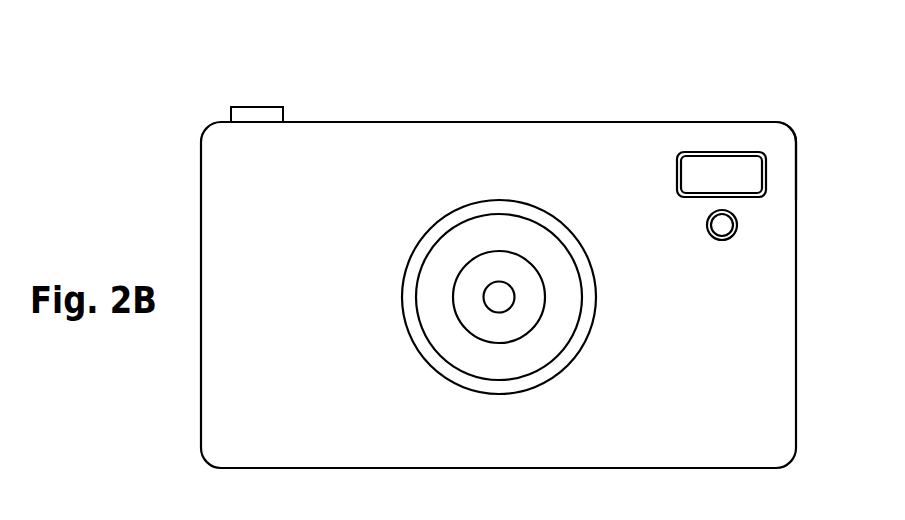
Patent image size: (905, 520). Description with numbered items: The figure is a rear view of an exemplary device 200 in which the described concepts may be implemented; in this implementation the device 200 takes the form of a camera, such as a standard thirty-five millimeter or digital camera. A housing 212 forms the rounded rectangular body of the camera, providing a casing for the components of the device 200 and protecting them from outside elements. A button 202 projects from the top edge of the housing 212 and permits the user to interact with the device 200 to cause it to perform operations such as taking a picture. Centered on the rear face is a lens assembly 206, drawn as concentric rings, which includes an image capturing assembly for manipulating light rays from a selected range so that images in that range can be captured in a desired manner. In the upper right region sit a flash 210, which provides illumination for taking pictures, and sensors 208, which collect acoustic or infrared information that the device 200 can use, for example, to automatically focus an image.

The device 200 is at (404, 52).
The button 202 is at (264, 107).
The lens assembly 206 is at (548, 215).
The sensors 208 is at (615, 0).
The flash 210 is at (692, 152).
The housing 212 is at (766, 122).